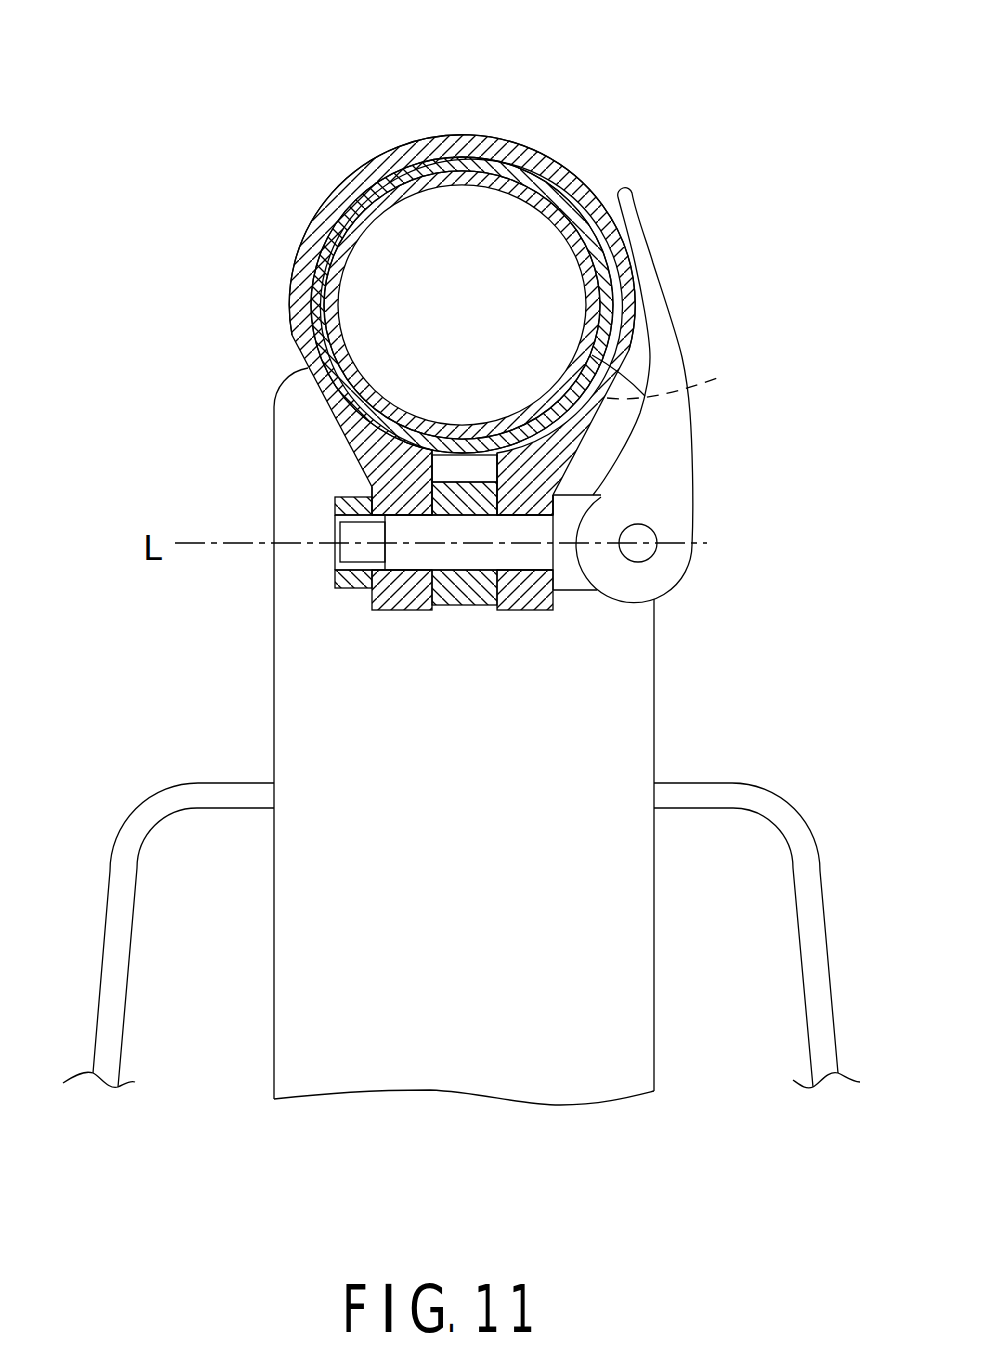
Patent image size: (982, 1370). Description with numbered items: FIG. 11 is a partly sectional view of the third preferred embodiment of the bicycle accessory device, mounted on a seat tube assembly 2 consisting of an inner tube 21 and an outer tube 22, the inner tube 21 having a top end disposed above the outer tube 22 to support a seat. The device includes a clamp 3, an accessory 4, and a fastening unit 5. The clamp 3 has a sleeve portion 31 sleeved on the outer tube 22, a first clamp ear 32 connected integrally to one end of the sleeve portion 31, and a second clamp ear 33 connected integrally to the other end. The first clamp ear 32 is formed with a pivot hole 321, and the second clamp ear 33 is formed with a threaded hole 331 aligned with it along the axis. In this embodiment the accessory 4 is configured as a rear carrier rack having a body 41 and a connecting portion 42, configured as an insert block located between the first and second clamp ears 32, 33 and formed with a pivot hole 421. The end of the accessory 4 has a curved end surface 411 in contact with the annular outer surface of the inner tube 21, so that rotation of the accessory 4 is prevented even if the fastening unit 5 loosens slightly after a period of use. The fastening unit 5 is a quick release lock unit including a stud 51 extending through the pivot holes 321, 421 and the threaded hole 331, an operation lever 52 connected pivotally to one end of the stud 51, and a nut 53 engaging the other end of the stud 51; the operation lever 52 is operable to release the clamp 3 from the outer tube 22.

The tube 2 is at (300, 289).
The inner tube 21 is at (360, 228).
The outer tube 22 is at (326, 263).
The clamp 3 is at (464, 122).
The sleeve portion 31 is at (371, 167).
The first clamp ear 32 is at (527, 600).
The pivot hole 321 is at (533, 527).
The second clamp ear 33 is at (397, 597).
The threaded hole 331 is at (403, 557).
The accessory 4 is at (252, 1064).
The body 41 is at (654, 748).
The curved end surface 411 is at (799, 359).
The connecting portion 42 is at (455, 528).
The pivot hole 421 is at (458, 495).
The fastening unit 5 is at (715, 555).
The stud 51 is at (567, 593).
The operation lever 52 is at (693, 510).
The nut 53 is at (336, 500).